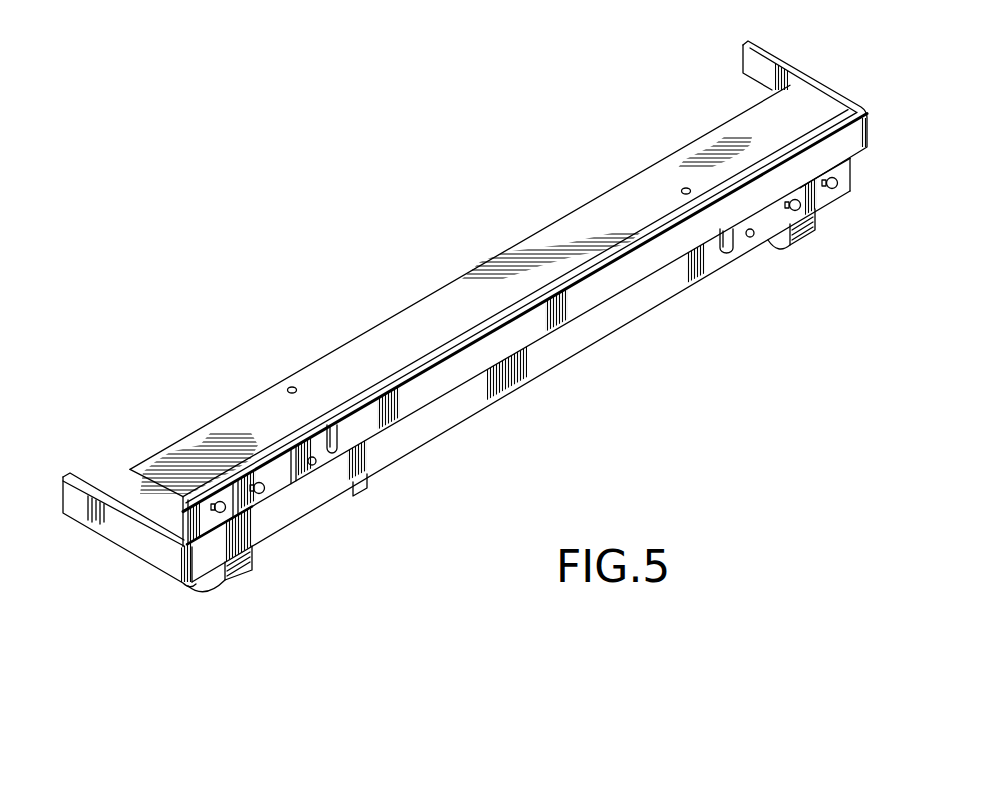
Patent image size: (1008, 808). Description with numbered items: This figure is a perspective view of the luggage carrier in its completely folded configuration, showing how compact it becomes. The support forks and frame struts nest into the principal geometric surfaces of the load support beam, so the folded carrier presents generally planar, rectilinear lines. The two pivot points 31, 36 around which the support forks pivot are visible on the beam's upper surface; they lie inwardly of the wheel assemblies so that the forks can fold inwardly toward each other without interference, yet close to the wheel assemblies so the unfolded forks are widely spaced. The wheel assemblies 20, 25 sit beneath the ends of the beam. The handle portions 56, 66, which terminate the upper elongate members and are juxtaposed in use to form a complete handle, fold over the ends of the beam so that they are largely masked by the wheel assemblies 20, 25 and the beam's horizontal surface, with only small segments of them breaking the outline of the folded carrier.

The handle portion 66 is at (779, 62).
The handle portion 56 is at (125, 538).
The wheel assembly 20 is at (226, 581).
The wheel assembly 25 is at (783, 232).
The pivot point 36 is at (685, 188).
The pivot point 31 is at (292, 387).